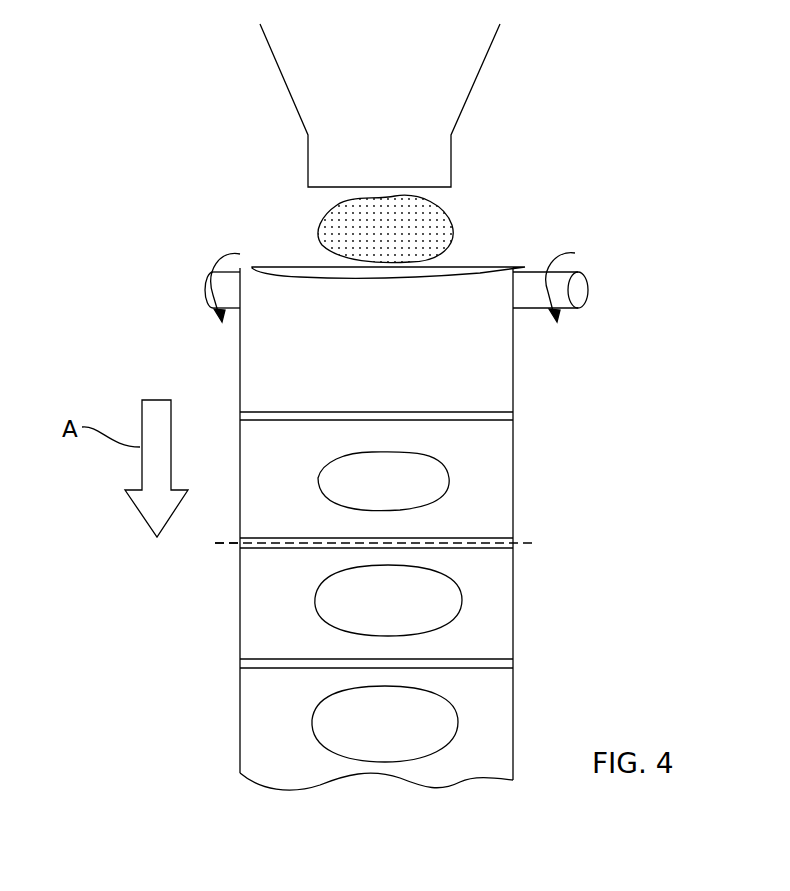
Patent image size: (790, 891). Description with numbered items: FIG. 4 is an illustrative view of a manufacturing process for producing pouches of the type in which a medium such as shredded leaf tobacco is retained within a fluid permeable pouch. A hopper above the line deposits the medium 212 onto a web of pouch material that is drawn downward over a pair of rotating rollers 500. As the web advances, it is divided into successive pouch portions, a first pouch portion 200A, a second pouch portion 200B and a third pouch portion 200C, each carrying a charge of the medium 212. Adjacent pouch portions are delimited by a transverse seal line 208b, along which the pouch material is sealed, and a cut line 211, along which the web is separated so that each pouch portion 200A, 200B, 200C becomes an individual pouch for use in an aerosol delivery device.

The rollers 500 is at (238, 254).
The third pouch portion 200C is at (240, 477).
The second pouch portion 200B is at (240, 615).
The first pouch portion 200A is at (222, 740).
The medium 212 is at (387, 607).
The seal line 208b is at (517, 545).
The cut line 211 is at (210, 558).